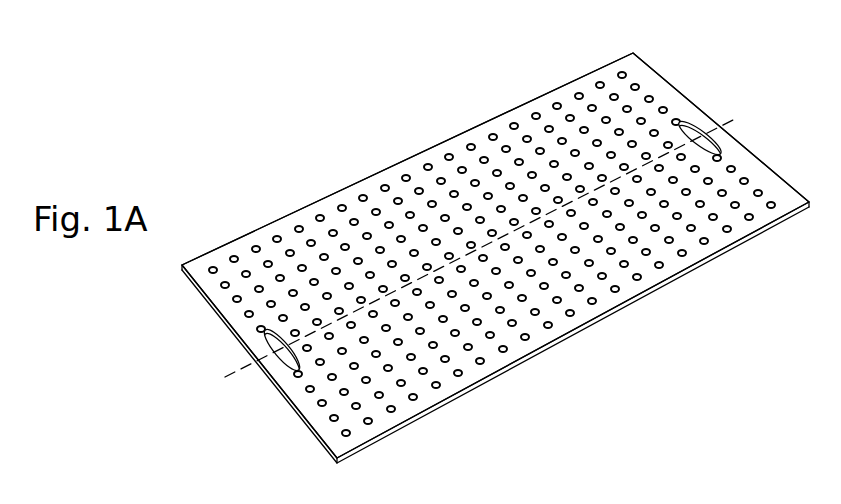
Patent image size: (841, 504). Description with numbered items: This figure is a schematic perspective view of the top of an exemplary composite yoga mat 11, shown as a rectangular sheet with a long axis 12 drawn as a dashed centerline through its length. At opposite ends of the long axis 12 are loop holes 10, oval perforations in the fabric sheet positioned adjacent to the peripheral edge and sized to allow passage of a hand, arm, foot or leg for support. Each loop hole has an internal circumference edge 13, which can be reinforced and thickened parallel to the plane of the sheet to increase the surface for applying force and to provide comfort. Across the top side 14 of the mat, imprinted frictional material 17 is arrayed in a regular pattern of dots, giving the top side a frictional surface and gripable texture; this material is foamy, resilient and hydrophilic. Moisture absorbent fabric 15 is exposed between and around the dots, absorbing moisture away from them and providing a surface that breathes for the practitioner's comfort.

The loop holes 10 is at (287, 357).
The yoga mat 11 is at (360, 145).
The long axis 12 is at (735, 104).
The loop hole internal circumference edge 13 is at (693, 123).
The top side 14 is at (603, 291).
The moisture absorbent fabric 15 is at (577, 105).
The imprinted frictional material 17 is at (490, 134).